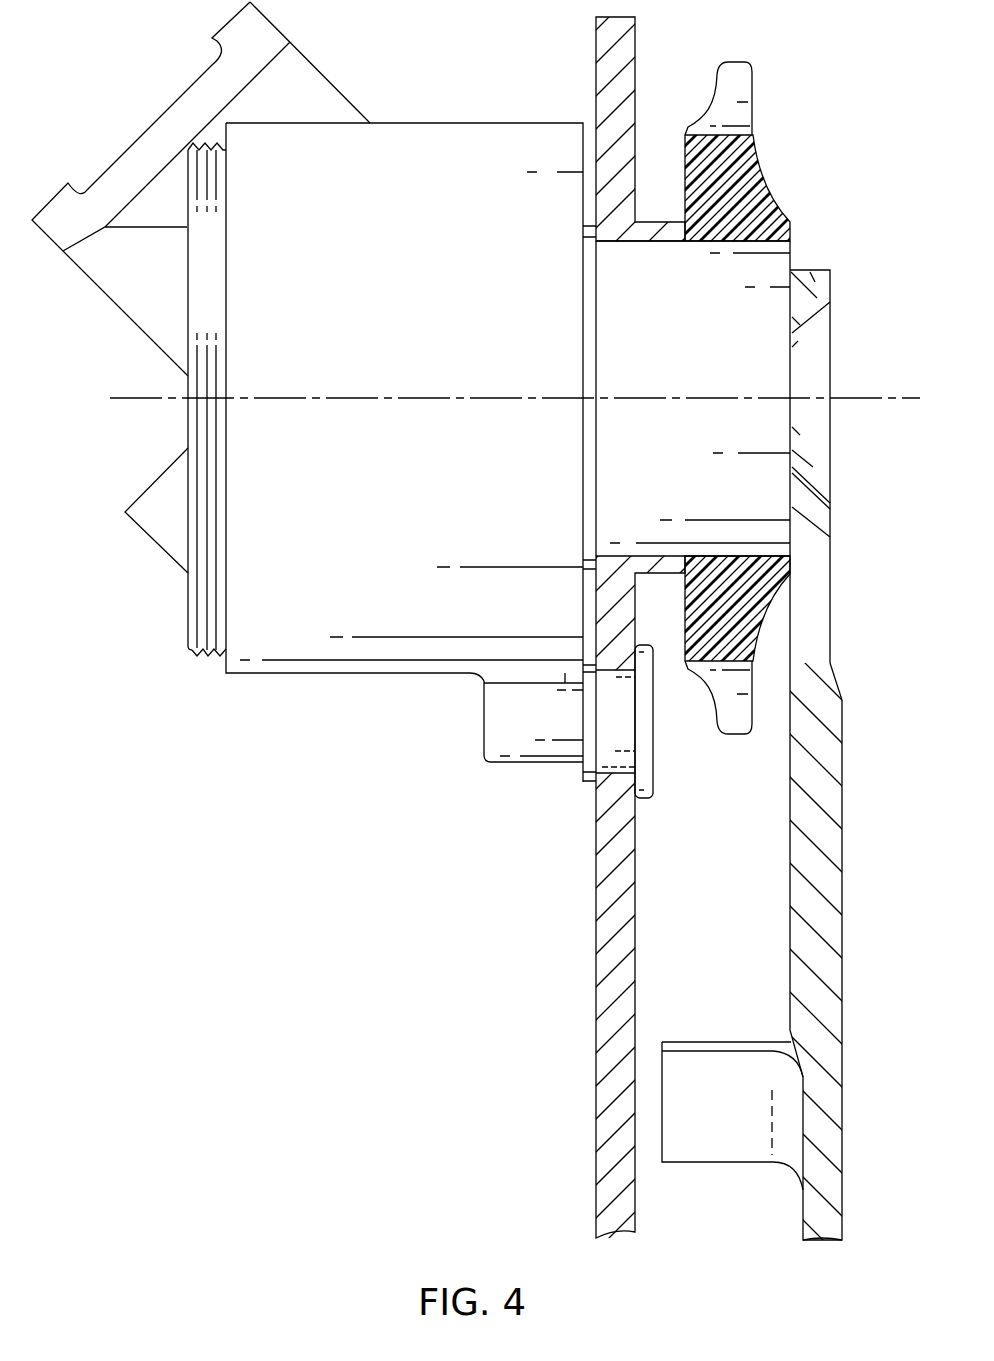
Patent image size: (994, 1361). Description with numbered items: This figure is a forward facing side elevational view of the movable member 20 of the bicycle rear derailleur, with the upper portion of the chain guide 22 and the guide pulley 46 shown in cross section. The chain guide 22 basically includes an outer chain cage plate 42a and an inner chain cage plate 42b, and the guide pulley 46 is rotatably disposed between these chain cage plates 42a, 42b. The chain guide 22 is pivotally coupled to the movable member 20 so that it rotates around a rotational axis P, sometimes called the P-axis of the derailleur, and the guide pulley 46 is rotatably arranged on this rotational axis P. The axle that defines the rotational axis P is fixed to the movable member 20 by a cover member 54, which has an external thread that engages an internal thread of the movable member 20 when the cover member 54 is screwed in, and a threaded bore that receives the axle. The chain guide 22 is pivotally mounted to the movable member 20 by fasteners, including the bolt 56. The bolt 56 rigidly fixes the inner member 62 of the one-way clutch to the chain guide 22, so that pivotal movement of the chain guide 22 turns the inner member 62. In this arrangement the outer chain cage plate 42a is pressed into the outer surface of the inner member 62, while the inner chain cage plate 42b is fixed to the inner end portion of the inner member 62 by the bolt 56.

The movable member 20 is at (190, 82).
The chain guide 22 is at (622, 645).
The outer chain cage plate 42a is at (637, 926).
The inner chain cage plate 42b is at (792, 952).
The guide pulley 46 is at (767, 178).
The cover member 54 is at (203, 655).
The bolt 56 is at (832, 452).
The inner member 62 is at (792, 253).
The rotational axis P is at (138, 400).